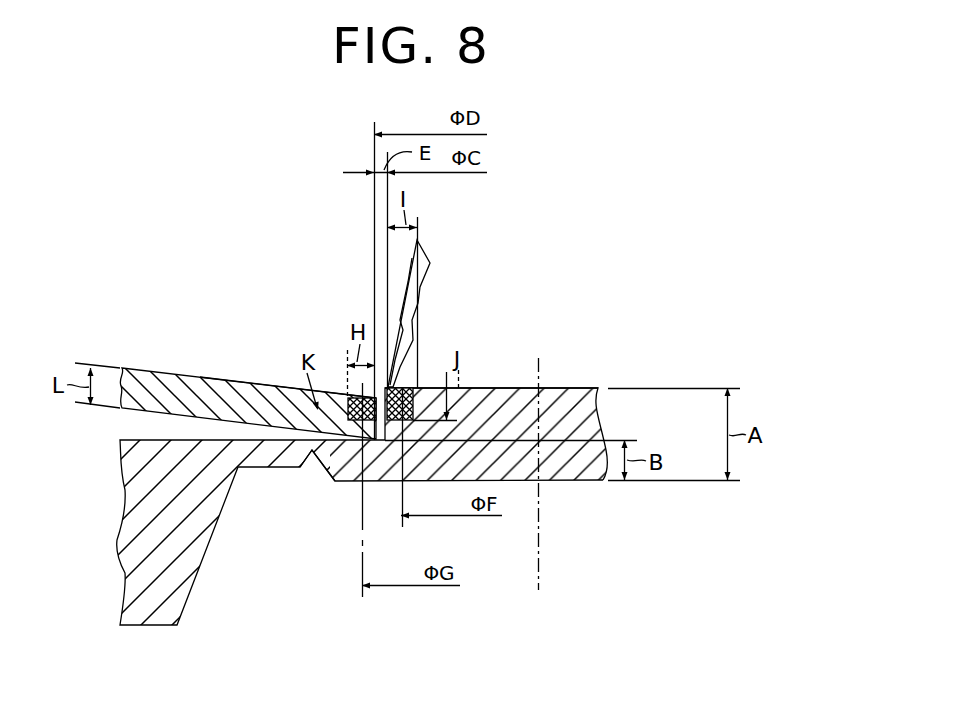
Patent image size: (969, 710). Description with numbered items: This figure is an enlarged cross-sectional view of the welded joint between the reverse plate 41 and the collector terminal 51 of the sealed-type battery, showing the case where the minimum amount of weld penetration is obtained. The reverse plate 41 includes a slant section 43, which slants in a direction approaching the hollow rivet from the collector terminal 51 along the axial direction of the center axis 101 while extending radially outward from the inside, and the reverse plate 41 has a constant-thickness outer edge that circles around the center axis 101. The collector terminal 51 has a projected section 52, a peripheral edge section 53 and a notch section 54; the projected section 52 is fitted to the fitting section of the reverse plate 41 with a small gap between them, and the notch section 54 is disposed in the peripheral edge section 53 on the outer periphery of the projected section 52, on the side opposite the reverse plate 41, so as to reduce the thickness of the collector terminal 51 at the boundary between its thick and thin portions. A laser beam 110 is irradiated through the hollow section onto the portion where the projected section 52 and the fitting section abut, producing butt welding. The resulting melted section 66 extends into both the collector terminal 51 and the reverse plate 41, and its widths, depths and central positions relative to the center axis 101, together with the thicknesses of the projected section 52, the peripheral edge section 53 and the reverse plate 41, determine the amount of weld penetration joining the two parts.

The reverse plate 41 is at (155, 366).
The slant section 43 is at (212, 390).
The collector terminal 51 is at (576, 386).
The projected section 52 is at (510, 400).
The peripheral edge section 53 is at (348, 466).
The notch section 54 is at (306, 468).
The melted section 66 is at (414, 406).
The center axis 101 is at (541, 572).
The laser beam 110 is at (424, 250).